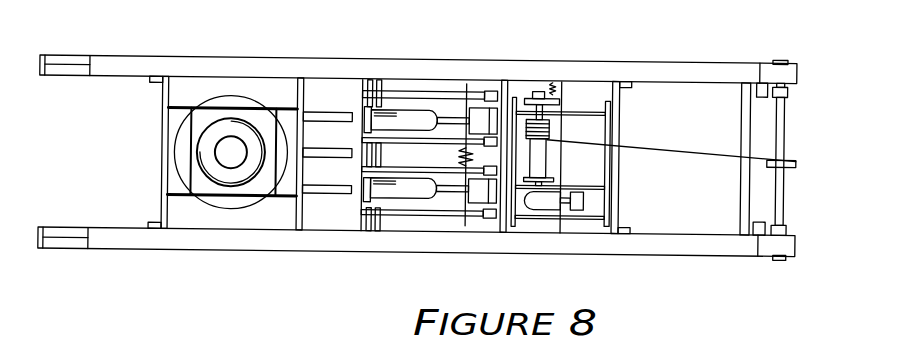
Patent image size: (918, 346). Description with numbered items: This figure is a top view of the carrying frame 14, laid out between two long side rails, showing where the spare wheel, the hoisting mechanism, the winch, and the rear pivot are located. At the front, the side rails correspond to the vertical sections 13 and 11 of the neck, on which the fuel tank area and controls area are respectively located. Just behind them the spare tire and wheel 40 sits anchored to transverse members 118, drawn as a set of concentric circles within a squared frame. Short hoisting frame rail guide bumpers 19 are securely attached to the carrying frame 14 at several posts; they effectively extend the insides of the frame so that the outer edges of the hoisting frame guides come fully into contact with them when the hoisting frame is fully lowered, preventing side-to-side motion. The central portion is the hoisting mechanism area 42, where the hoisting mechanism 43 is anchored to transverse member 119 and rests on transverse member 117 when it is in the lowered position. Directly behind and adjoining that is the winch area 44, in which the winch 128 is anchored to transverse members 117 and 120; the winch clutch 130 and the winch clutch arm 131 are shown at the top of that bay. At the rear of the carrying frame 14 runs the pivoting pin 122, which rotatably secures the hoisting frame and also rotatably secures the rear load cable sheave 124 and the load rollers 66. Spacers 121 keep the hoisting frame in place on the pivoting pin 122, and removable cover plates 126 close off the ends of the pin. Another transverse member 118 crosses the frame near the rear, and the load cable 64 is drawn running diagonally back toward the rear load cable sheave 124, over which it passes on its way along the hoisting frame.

The vertical section of neck 13 is at (72, 55).
The vertical section of neck 11 is at (70, 227).
The hoisting frame rail guide bumpers 19 is at (152, 82).
The transverse members 118 is at (290, 92).
The spare tire and wheel 40 is at (238, 203).
The carrying frame 14 is at (313, 238).
The hoisting mechanism area 42 is at (420, 155).
The hoisting mechanism 43 is at (483, 122).
The transverse member 119 is at (363, 217).
The winch clutch 130 is at (542, 92).
The winch clutch arm 131 is at (550, 93).
The transverse member 117 is at (492, 225).
The transverse member 120 is at (617, 190).
The winch 128 is at (548, 208).
The winch area 44 is at (577, 158).
The load cable 64 is at (680, 148).
The spacers 121 is at (763, 85).
The load rollers 66 is at (788, 91).
The rear load cable sheave 124 is at (792, 158).
The pivoting pin 122 is at (786, 200).
The removable cover plates 126 is at (783, 62).